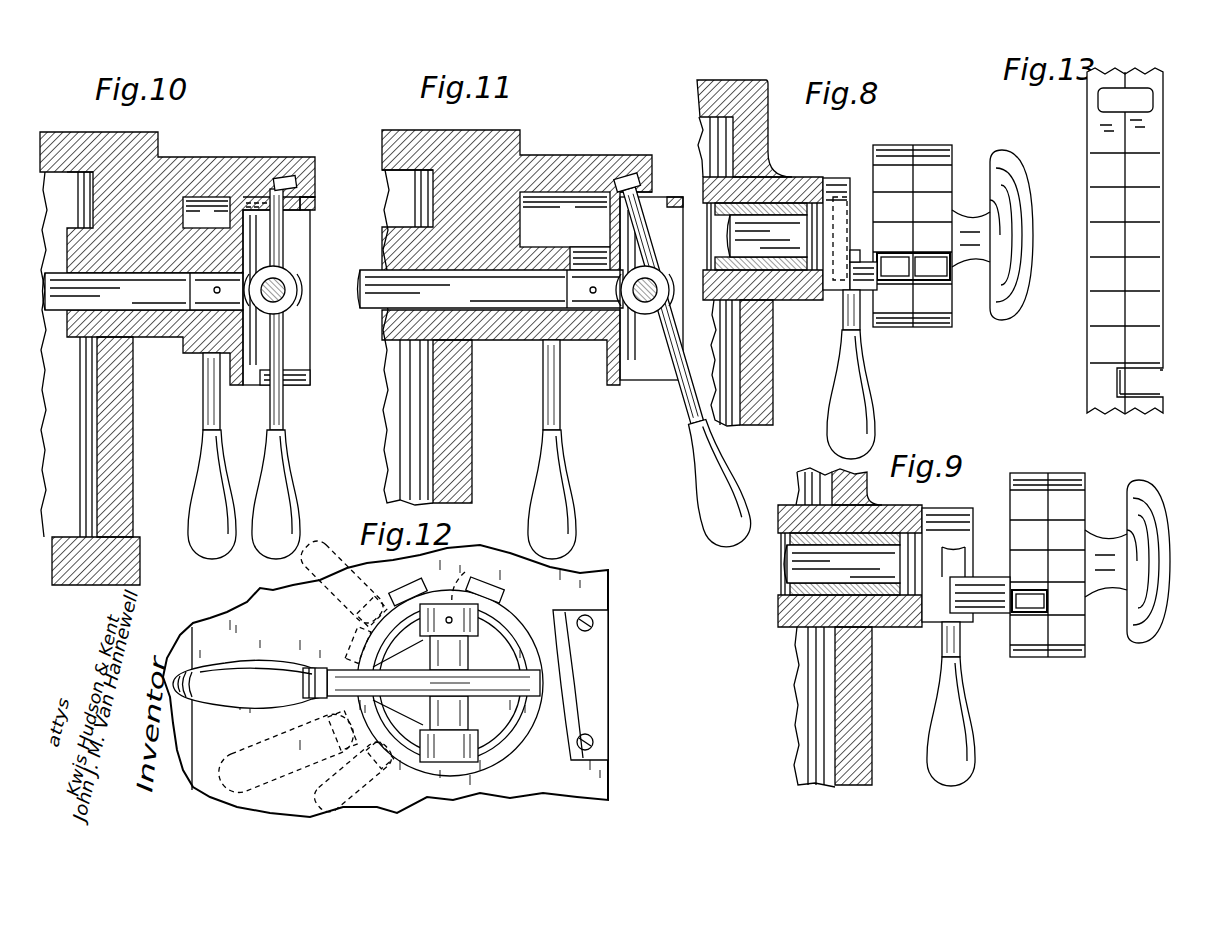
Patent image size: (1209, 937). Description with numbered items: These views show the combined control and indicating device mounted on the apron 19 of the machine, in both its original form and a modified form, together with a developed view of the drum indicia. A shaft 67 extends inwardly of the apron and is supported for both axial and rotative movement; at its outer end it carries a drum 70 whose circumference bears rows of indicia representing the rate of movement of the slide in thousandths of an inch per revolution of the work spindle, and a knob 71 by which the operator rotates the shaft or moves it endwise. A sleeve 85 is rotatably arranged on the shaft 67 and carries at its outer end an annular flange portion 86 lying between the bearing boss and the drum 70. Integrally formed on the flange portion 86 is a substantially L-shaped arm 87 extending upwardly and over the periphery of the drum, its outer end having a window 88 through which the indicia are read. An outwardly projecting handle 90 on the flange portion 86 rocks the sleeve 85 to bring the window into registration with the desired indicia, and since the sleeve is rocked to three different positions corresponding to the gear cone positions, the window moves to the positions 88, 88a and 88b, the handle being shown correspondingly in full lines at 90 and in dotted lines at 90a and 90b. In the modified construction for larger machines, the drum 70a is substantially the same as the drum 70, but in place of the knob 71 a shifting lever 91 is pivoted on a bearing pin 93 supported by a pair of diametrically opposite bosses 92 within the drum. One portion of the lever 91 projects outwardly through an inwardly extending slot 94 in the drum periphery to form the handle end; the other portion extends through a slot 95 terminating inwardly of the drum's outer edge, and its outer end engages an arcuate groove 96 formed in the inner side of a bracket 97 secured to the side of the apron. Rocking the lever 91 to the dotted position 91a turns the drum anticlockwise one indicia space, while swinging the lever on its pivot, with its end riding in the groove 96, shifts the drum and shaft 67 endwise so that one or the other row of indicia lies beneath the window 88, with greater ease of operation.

In FIG. 10, the frame body 19 is at (122, 468).
In FIG. 11, the frame body 19 is at (463, 467).
In FIG. 8, the frame body 19 is at (765, 380).
In FIG. 9, the frame body 19 is at (860, 746).
In FIG. 12, the frame body 19 is at (597, 771).
In FIG. 10, the shaft 67 is at (152, 313).
In FIG. 11, the shaft 67 is at (374, 310).
In FIG. 8, the shaft 67 is at (770, 232).
In FIG. 9, the shaft 67 is at (830, 566).
In FIG. 8, the drum 70 is at (950, 152).
In FIG. 9, the drum 70 is at (1078, 483).
In FIG. 13, the drum 70 is at (1093, 322).
In FIG. 10, the drum 70a is at (312, 266).
In FIG. 11, the drum 70a is at (677, 258).
In FIG. 8, the knob 71 is at (1018, 167).
In FIG. 9, the knob 71 is at (1146, 492).
In FIG. 10, the sleeve 85 is at (80, 228).
In FIG. 11, the sleeve 85 is at (422, 237).
In FIG. 8, the sleeve 85 is at (762, 272).
In FIG. 9, the sleeve 85 is at (835, 533).
In FIG. 8, the annular flange portion 86 is at (843, 178).
In FIG. 9, the annular flange portion 86 is at (960, 512).
In FIG. 8, the L-shaped arm 87 is at (867, 297).
In FIG. 9, the L-shaped arm 87 is at (970, 625).
In FIG. 8, the window 88 is at (950, 280).
In FIG. 12, the window 88 is at (412, 585).
In FIG. 12, the window position 88a is at (502, 589).
In FIG. 12, the window position 88b is at (343, 643).
In FIG. 10, the handle 90 is at (203, 403).
In FIG. 11, the handle 90 is at (545, 407).
In FIG. 8, the handle 90 is at (845, 320).
In FIG. 9, the handle 90 is at (942, 640).
In FIG. 12, the handle 90 is at (192, 667).
In FIG. 12, the handle in second position 90a is at (320, 600).
In FIG. 12, the handle in third position 90b is at (320, 789).
In FIG. 10, the shifting lever 91 is at (284, 410).
In FIG. 11, the shifting lever 91 is at (673, 402).
In FIG. 12, the shifting lever 91 is at (210, 690).
In FIG. 12, the shifting lever position 91a is at (246, 750).
In FIG. 12, the bosses 92 is at (468, 632).
In FIG. 10, the bearing pin 93 is at (286, 289).
In FIG. 11, the bearing pin 93 is at (663, 268).
In FIG. 12, the bearing pin 93 is at (466, 578).
In FIG. 10, the slot 94 is at (311, 377).
In FIG. 13, the slot 94 is at (1150, 394).
In FIG. 10, the slot 95 is at (272, 212).
In FIG. 13, the slot 95 is at (1148, 90).
In FIG. 10, the arcuate groove 96 is at (297, 160).
In FIG. 11, the arcuate groove 96 is at (625, 170).
In FIG. 12, the arcuate groove 96 is at (608, 694).
In FIG. 10, the bracket 97 is at (205, 158).
In FIG. 11, the bracket 97 is at (563, 156).
In FIG. 12, the bracket 97 is at (578, 610).